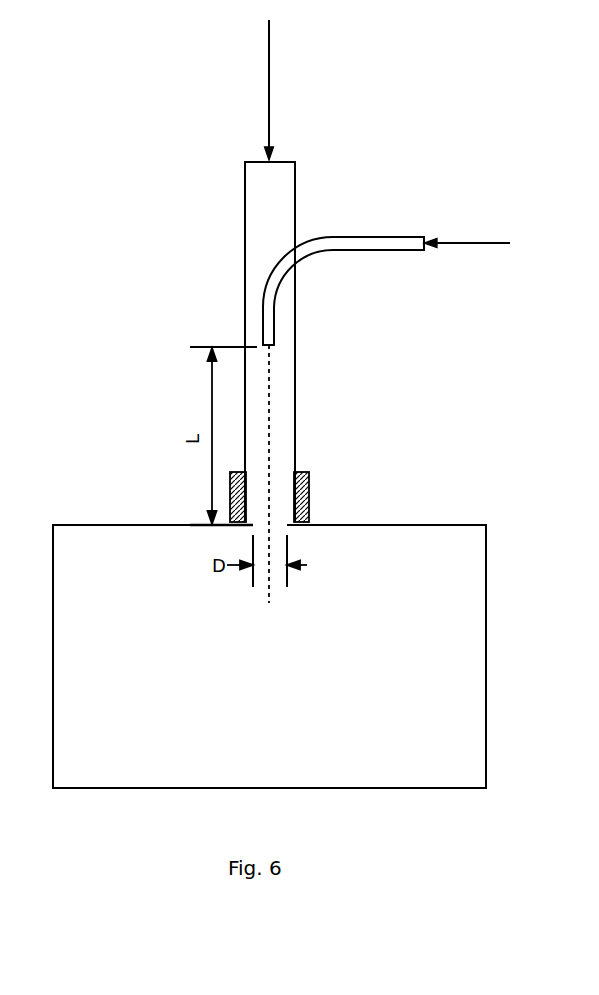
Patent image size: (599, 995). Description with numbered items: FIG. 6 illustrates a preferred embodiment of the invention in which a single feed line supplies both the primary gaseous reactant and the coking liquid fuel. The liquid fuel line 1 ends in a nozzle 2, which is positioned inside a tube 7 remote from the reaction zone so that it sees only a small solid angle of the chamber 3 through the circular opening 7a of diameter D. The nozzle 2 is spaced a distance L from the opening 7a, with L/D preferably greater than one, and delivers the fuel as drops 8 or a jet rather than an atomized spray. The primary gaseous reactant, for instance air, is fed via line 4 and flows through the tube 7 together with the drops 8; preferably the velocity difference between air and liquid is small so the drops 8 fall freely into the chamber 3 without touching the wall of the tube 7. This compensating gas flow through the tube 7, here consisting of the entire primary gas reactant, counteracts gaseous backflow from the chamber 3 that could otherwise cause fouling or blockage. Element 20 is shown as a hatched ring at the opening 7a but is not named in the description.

The liquid fuel line 1 is at (368, 225).
The nozzle 2 is at (248, 330).
The chamber 3 is at (440, 594).
The line 4 is at (280, 98).
The tube 7 is at (308, 372).
The circular opening 7a is at (289, 516).
The drops 8 is at (286, 421).
The sealing ring 20 is at (322, 470).